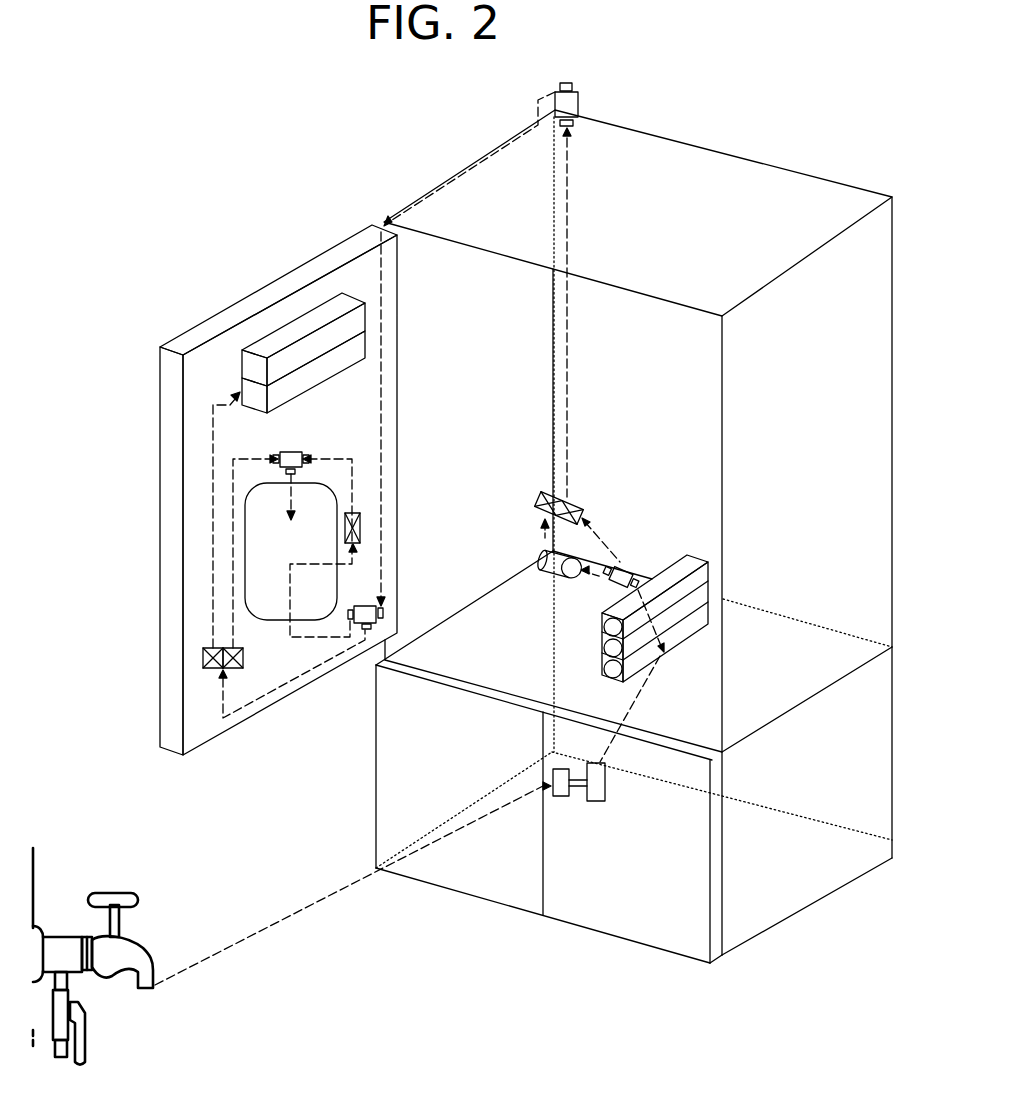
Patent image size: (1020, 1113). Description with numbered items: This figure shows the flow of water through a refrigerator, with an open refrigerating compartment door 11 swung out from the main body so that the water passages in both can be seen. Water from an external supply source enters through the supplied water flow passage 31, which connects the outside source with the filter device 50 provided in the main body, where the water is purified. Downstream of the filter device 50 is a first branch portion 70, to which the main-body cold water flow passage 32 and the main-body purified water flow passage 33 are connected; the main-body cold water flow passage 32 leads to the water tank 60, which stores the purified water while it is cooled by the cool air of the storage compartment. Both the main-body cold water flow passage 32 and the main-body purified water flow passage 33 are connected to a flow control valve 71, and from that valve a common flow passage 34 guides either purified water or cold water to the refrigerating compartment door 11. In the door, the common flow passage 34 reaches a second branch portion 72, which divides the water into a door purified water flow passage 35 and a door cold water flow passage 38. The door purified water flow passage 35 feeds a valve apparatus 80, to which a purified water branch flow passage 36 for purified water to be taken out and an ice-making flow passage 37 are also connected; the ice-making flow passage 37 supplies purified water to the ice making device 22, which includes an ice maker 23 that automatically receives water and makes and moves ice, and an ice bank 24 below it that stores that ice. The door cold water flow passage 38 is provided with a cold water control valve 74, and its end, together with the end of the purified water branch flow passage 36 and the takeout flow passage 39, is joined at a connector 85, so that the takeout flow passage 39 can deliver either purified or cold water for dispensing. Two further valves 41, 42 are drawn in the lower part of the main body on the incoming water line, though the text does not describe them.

The refrigerating compartment door 11 is at (170, 386).
The ice making device 22 is at (295, 280).
The ice maker 23 is at (273, 340).
The ice bank 24 is at (319, 372).
The supplied water flow passage 31 is at (289, 918).
The main-body cold water flow passage 32 is at (542, 531).
The main-body purified water flow passage 33 is at (603, 541).
The common flow passage 34 is at (567, 208).
The door purified water flow passage 35 is at (257, 702).
The purified water branch flow passage 36 is at (232, 492).
The ice-making flow passage 37 is at (213, 434).
The door cold water flow passage 38 is at (290, 601).
The takeout flow passage 39 is at (290, 497).
The first valve 41 is at (565, 797).
The second valve 42 is at (603, 790).
The filter device 50 is at (703, 576).
The water tank 60 is at (542, 566).
The first branch portion 70 is at (628, 567).
The flow control valve 71 is at (578, 498).
The second branch portion 72 is at (366, 605).
The cold water control valve 74 is at (363, 527).
The valve apparatus 80 is at (193, 659).
The connector 85 is at (292, 450).